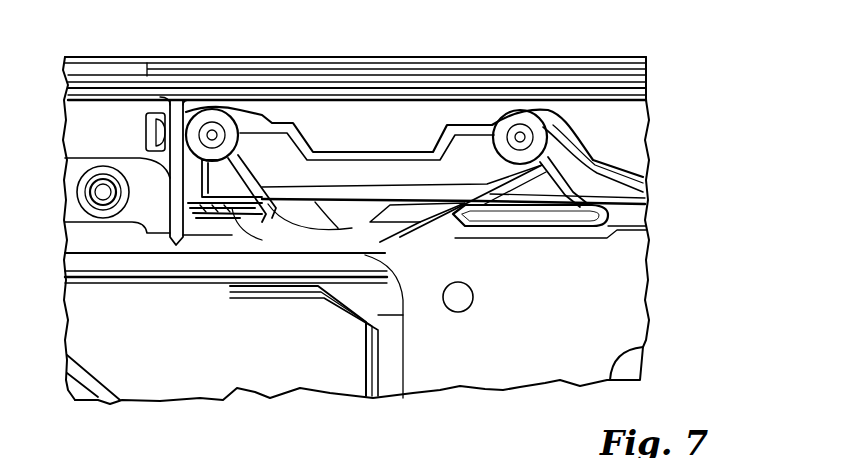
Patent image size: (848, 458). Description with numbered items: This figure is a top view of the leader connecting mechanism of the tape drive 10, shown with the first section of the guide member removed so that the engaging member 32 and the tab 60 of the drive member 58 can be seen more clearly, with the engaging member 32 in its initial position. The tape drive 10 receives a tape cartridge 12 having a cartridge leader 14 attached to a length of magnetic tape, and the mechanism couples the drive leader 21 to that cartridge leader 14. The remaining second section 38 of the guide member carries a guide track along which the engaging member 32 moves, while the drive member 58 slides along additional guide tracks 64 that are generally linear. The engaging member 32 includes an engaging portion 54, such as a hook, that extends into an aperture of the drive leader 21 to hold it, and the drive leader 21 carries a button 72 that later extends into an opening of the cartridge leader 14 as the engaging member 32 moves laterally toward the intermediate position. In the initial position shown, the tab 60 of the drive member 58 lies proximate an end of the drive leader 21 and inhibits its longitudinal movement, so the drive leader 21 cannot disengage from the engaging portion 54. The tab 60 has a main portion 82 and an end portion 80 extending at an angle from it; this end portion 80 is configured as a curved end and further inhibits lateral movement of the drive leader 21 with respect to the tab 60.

The tape drive 10 is at (668, 90).
The tape cartridge 12 is at (403, 358).
The cartridge leader 14 is at (158, 265).
The drive leader 21 is at (345, 218).
The engaging member 32 is at (455, 232).
The second section 38 is at (365, 58).
The engaging portion 54 is at (393, 235).
The drive member 58 is at (243, 73).
The tab 60 is at (185, 243).
The guide tracks 64 is at (303, 80).
The button 72 is at (207, 224).
The end portion 80 is at (172, 243).
The main portion 82 is at (146, 160).